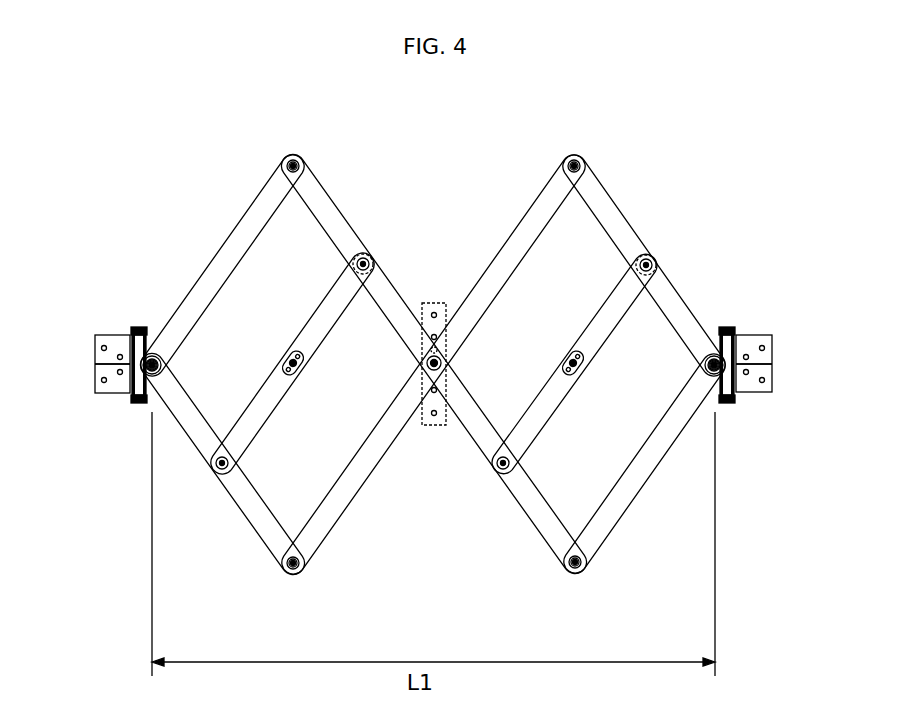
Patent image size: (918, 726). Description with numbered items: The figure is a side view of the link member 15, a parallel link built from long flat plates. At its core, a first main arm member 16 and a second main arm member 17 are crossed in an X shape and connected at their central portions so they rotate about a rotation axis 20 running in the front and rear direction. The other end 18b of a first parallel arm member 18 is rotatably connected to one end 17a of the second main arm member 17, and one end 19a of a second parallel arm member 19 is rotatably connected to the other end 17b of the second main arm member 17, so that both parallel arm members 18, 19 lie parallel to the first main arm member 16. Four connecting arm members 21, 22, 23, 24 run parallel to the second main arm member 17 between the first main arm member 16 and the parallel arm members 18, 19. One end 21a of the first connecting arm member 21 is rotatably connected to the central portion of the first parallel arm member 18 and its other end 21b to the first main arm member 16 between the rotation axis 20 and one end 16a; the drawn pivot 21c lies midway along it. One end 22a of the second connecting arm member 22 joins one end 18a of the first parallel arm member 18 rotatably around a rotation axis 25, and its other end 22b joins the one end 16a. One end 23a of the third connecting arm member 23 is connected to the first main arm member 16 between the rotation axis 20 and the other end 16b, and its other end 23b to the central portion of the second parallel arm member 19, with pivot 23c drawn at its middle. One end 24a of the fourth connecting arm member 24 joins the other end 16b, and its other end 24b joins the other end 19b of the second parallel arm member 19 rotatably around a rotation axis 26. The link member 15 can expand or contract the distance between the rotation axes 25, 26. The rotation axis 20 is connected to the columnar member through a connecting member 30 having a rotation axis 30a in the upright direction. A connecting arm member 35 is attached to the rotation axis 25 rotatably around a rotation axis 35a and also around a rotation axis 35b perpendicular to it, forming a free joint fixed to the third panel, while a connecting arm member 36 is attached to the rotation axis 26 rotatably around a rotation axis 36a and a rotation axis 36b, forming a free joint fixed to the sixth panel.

The link member 15 is at (671, 470).
The first main arm member 16 is at (526, 490).
The one end of first main arm member 16a is at (570, 574).
The other end of first main arm member 16b is at (289, 158).
The second main arm member 17 is at (516, 232).
The one end of second main arm member 17a is at (584, 164).
The other end of second main arm member 17b is at (288, 574).
The first parallel arm member 18 is at (624, 226).
The one end of first parallel arm member 18a is at (720, 330).
The other end of first parallel arm member 18b is at (570, 156).
The second parallel arm member 19 is at (258, 514).
The one end of second parallel arm member 19a is at (300, 572).
The other end of second parallel arm member 19b is at (166, 362).
The rotation axis 20 is at (445, 362).
The first connecting arm member 21 is at (575, 400).
The one end of first connecting arm member 21a is at (656, 263).
The other end of first connecting arm member 21b is at (493, 470).
The fifth link middle pivot 21c is at (566, 354).
The second connecting arm member 22 is at (608, 512).
The one end of second connecting arm member 22a is at (724, 406).
The other end of second connecting arm member 22b is at (584, 572).
The third connecting arm member 23 is at (276, 402).
The one end of third connecting arm member 23a is at (374, 262).
The other end of third connecting arm member 23b is at (220, 472).
The seventh link middle pivot 23c is at (288, 356).
The fourth connecting arm member 24 is at (208, 264).
The one end of fourth connecting arm member 24a is at (302, 164).
The other end of fourth connecting arm member 24b is at (142, 403).
The rotation axis 25 is at (702, 370).
The rotation axis 26 is at (152, 352).
The connecting member 30 is at (441, 426).
The rotation axis 30a is at (430, 366).
The connecting arm member 35 is at (760, 354).
The rotation axis 35a is at (702, 363).
The rotation axis 35b is at (742, 384).
The connecting arm member 36 is at (98, 352).
The rotation axis 36a is at (126, 386).
The rotation axis 36b is at (168, 369).